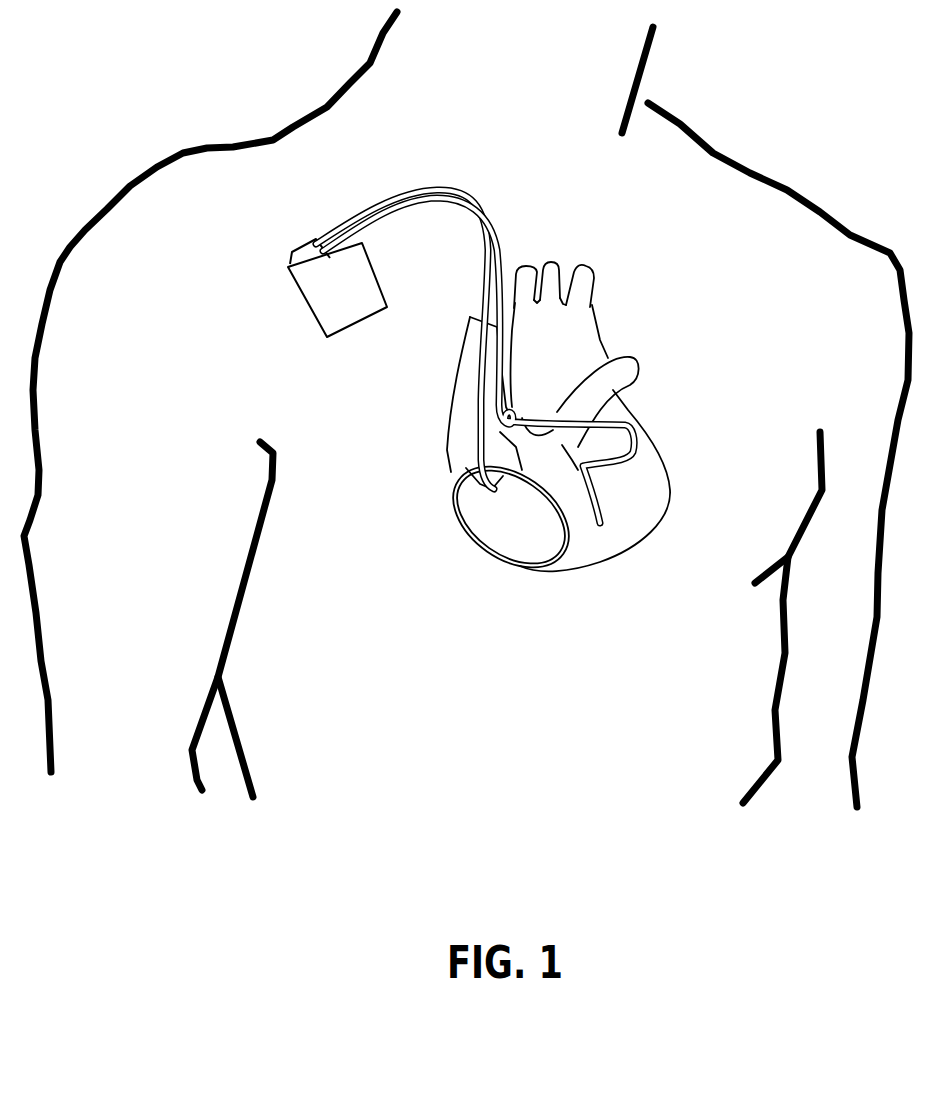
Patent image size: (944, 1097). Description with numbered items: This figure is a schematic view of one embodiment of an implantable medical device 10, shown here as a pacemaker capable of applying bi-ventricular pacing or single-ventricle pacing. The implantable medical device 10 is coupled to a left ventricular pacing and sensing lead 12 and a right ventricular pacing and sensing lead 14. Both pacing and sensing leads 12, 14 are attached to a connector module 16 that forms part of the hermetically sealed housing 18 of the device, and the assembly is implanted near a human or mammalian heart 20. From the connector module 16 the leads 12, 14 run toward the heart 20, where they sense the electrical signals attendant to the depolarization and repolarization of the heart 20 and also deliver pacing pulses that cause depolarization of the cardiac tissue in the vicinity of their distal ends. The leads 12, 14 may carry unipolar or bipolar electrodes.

The implantable medical device 10 is at (420, 353).
The left ventricular pacing and sensing lead 12 is at (506, 242).
The right ventricular pacing and sensing lead 14 is at (483, 263).
The connector module 16 is at (291, 255).
The hermetically sealed housing 18 is at (362, 318).
The heart 20 is at (680, 481).